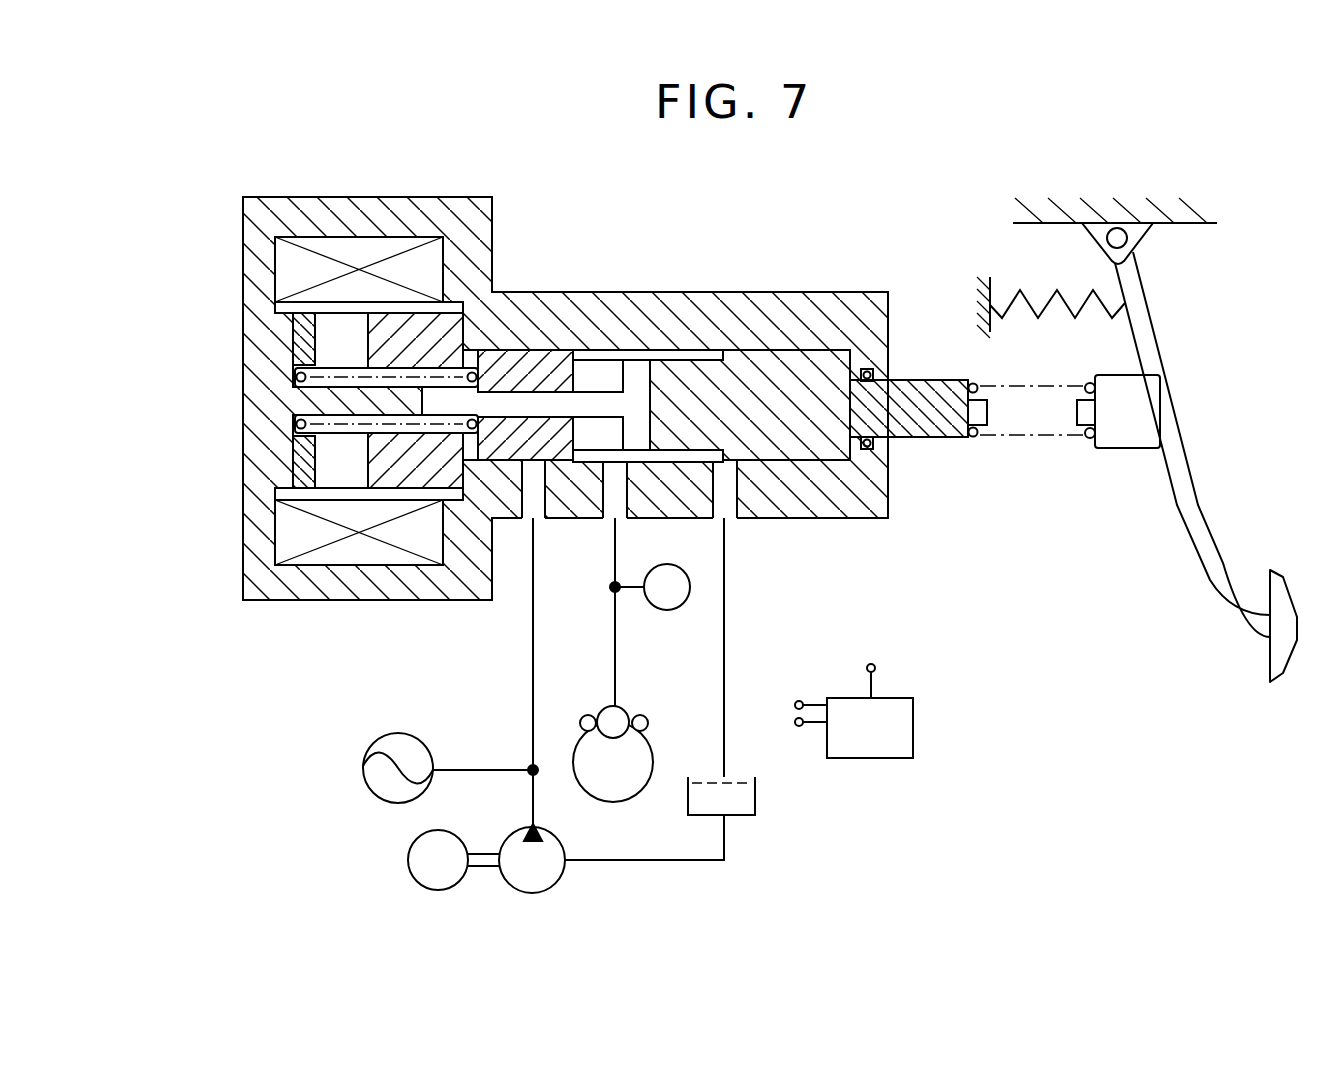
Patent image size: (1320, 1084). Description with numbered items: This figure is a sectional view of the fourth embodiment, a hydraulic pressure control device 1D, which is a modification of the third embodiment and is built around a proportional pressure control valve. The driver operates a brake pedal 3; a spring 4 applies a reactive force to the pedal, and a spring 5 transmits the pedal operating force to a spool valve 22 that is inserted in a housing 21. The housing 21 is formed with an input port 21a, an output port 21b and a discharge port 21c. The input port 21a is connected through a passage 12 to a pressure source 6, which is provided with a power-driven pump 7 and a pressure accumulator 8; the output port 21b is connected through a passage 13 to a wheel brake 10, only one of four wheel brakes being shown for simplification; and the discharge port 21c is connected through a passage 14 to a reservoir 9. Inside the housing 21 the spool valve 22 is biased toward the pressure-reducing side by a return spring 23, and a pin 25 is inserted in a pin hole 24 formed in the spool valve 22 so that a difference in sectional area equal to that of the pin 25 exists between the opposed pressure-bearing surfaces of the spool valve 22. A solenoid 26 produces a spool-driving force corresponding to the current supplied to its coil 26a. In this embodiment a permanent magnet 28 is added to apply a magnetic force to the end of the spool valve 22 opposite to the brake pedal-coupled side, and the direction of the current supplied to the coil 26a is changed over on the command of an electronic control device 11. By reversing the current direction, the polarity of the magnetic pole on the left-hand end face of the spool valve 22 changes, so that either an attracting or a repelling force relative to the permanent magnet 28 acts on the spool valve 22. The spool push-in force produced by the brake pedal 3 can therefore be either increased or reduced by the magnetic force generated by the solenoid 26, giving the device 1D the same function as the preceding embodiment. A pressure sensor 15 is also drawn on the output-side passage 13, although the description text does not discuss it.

The hydraulic pressure control device 1D is at (563, 417).
The brake pedal 3 is at (1193, 505).
The spring 4 is at (1019, 290).
The spring 5 is at (1045, 436).
The pressure source 6 is at (458, 902).
The power-driven pump 7 is at (556, 886).
The pressure accumulator 8 is at (362, 770).
The reservoir 9 is at (756, 803).
The wheel brake 10 is at (647, 717).
The electronic control device 11 is at (887, 747).
The passage 12 is at (532, 715).
The passage 13 is at (615, 655).
The passage 14 is at (724, 663).
The pressure sensor 15 is at (691, 592).
The housing 21 is at (880, 480).
The input port 21a is at (533, 497).
The output port 21b is at (612, 508).
The discharge port 21c is at (730, 515).
The spool valve 22 is at (667, 372).
The return spring 23 is at (295, 378).
The pin hole 24 is at (593, 396).
The pin 25 is at (507, 396).
The solenoid 26 is at (318, 572).
The coil 26a is at (383, 552).
The permanent magnet 28 is at (293, 458).